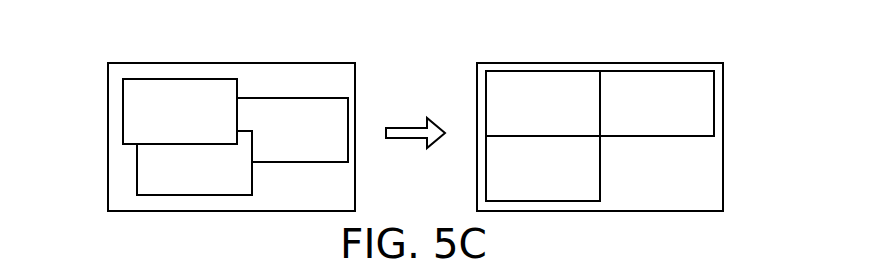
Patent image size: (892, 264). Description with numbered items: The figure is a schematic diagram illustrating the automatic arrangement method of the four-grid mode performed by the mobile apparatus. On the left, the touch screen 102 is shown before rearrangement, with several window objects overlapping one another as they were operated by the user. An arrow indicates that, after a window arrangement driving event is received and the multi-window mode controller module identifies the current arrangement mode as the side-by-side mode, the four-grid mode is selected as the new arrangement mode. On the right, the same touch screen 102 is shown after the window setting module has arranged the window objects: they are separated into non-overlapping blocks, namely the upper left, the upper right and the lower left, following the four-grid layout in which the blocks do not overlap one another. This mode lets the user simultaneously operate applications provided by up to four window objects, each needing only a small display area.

The touch screen 102 is at (108, 136).